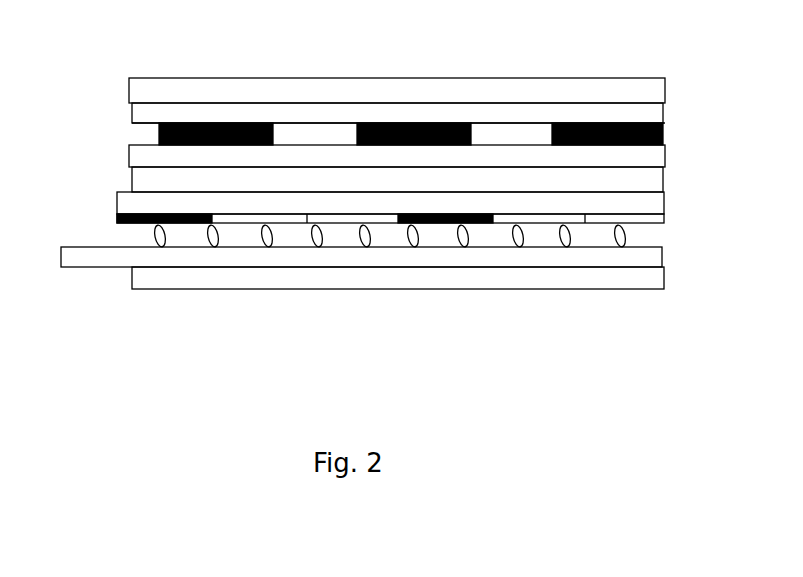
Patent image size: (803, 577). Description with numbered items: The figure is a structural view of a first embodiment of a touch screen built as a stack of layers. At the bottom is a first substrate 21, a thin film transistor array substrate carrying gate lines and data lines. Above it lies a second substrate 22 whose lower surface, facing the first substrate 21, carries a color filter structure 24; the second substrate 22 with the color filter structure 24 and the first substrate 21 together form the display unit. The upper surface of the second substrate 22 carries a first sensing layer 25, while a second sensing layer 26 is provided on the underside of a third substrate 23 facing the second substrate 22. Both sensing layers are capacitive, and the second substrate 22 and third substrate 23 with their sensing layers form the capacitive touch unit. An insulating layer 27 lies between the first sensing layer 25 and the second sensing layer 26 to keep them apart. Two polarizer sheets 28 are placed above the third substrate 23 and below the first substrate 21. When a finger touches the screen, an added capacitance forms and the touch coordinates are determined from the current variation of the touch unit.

The first substrate 21 is at (512, 257).
The second substrate 22 is at (650, 202).
The third substrate 23 is at (400, 110).
The color filter structure 24 is at (652, 217).
The first sensing layer 25 is at (163, 180).
The second sensing layer 26 is at (663, 133).
The insulating layer 27 is at (505, 152).
The polarizer sheets 28 is at (307, 277).